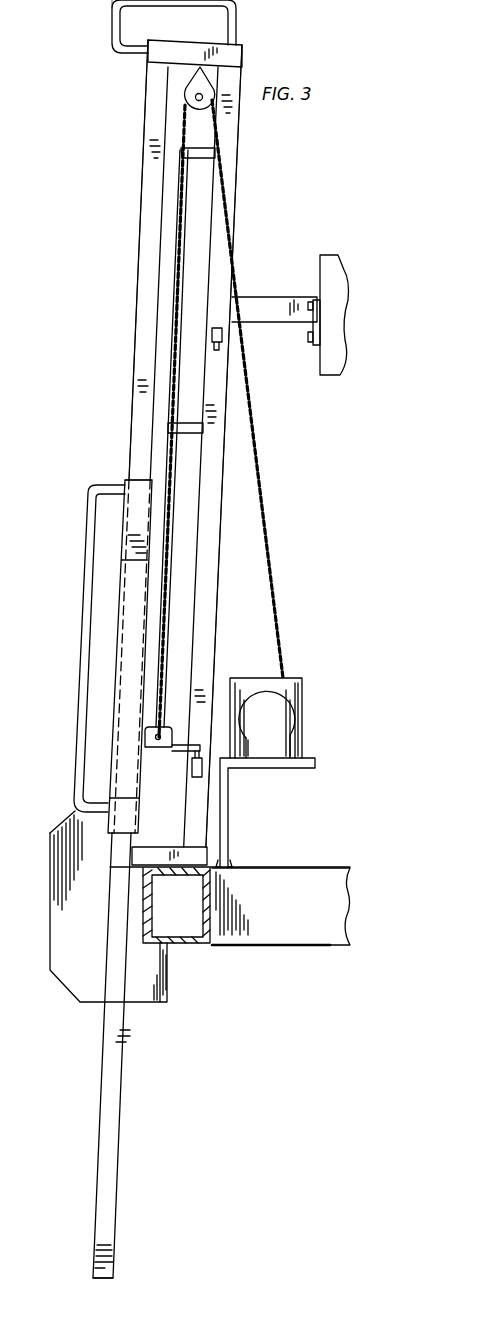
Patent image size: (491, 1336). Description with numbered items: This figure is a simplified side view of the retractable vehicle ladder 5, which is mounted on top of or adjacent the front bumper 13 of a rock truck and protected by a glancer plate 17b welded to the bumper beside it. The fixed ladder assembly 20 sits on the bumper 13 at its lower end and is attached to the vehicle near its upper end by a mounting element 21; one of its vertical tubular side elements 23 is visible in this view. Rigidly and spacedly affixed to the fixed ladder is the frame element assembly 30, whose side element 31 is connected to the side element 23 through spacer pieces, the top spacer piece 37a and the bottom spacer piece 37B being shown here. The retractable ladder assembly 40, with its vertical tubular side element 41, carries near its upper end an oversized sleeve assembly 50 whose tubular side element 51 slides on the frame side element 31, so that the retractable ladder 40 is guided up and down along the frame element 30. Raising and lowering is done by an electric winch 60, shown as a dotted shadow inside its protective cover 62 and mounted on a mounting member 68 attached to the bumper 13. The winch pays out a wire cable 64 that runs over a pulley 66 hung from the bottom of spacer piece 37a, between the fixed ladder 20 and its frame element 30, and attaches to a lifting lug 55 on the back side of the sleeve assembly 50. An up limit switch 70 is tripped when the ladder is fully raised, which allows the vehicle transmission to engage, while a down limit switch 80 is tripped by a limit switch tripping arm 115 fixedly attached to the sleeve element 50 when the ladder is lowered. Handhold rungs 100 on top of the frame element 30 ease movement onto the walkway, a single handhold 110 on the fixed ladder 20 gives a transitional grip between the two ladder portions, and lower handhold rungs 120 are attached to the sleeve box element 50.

The ladder 5 is at (100, 221).
The front bumper 13 is at (275, 946).
The glancer plate 17b is at (80, 1003).
The fixed ladder assembly 20 is at (236, 195).
The mounting element 21 is at (272, 297).
The vertical tubular side element 23 is at (240, 146).
The frame element assembly 30 is at (135, 282).
The side element of frame element assembly 31 is at (141, 156).
The spacer piece 37a is at (243, 56).
The spacer piece 37B is at (208, 858).
The retractable ladder assembly 40 is at (126, 1080).
The vertical tubular side element 41 is at (97, 1186).
The sleeve assembly 50 is at (125, 480).
The vertical tubular side element of sleeve assembly 51 is at (125, 548).
The lifting lug 55 is at (165, 727).
The electric winch 60 is at (290, 738).
The protective cover 62 is at (302, 680).
The wire cable 64 is at (268, 513).
The pulley 66 is at (194, 97).
The mounting member 68 is at (228, 818).
The up limit switch 70 is at (223, 335).
The down limit switch 80 is at (197, 778).
The handhold rung 100 is at (238, 12).
The single handhold 110 is at (183, 430).
The limit switch tripping arm 115 is at (186, 751).
The lower handhold rung 120 is at (80, 641).